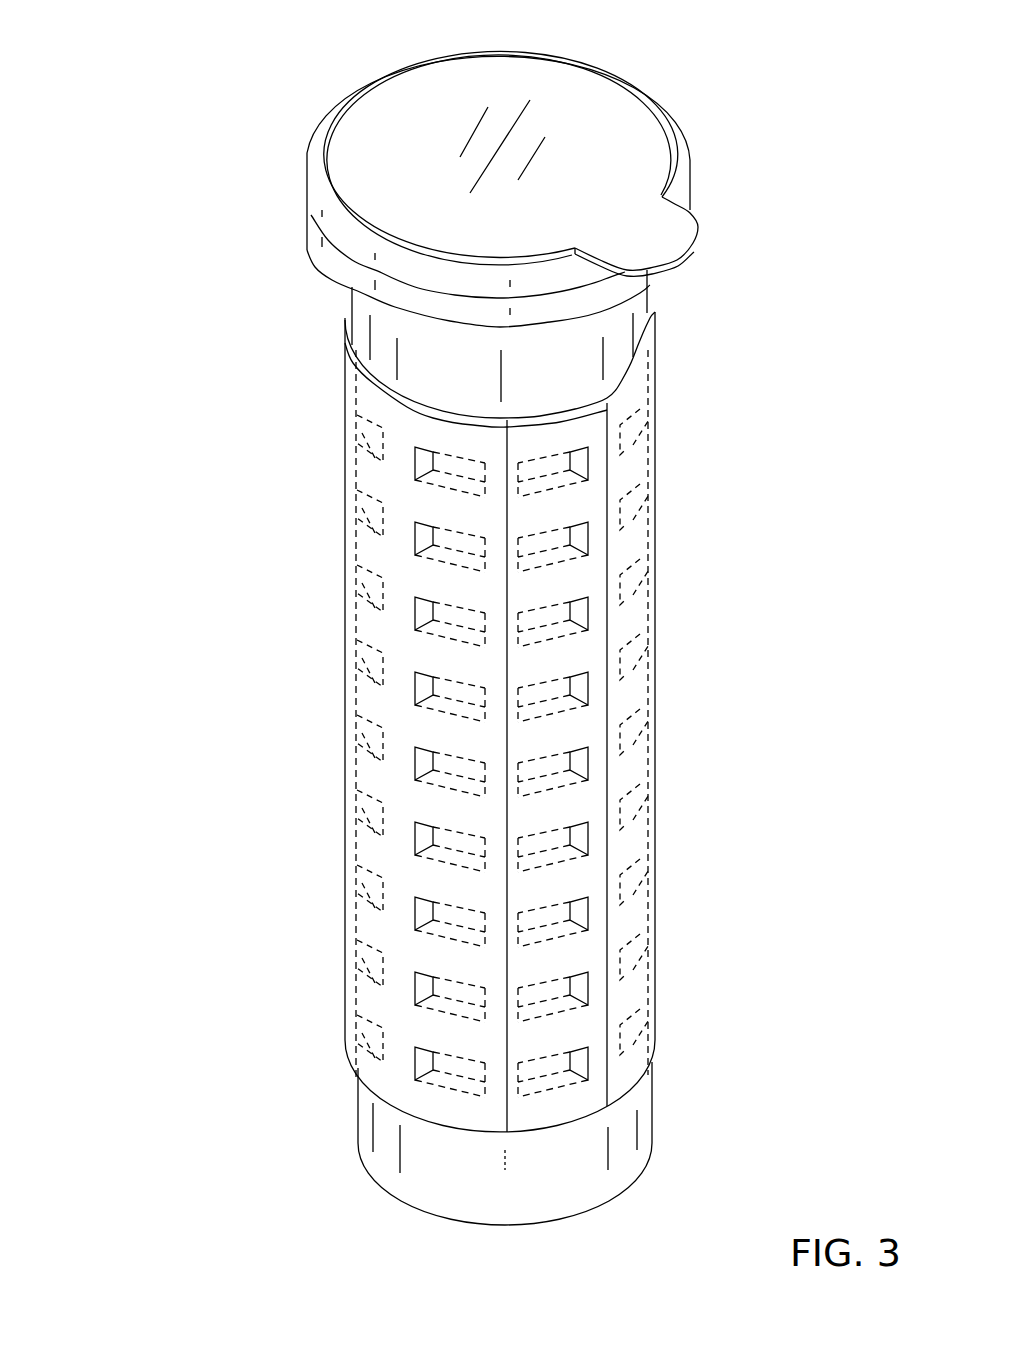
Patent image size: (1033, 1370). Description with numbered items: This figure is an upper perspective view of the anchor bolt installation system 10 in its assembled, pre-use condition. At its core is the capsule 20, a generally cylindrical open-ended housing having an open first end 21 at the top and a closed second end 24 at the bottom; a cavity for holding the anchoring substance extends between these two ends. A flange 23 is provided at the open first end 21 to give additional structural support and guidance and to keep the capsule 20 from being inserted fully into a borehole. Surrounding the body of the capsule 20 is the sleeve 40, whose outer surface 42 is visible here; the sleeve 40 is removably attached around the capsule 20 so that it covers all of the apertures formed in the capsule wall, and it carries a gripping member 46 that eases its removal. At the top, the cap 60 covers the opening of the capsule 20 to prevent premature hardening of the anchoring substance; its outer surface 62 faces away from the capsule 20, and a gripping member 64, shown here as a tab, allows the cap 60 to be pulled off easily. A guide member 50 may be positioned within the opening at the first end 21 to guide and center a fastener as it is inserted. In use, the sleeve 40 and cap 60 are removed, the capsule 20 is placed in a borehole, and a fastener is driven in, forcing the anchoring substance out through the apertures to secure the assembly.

The anchor bolt installation system 10 is at (162, 177).
The capsule 20 is at (353, 307).
The first end 21 is at (647, 308).
The flange 23 is at (340, 260).
The second end 24 is at (627, 1162).
The sleeve 40 is at (657, 380).
The outer surface 42 is at (398, 489).
The gripping member 46 is at (606, 487).
The guide member 50 is at (318, 203).
The cap 60 is at (686, 124).
The outer surface 62 is at (383, 140).
The gripping member 64 is at (699, 228).